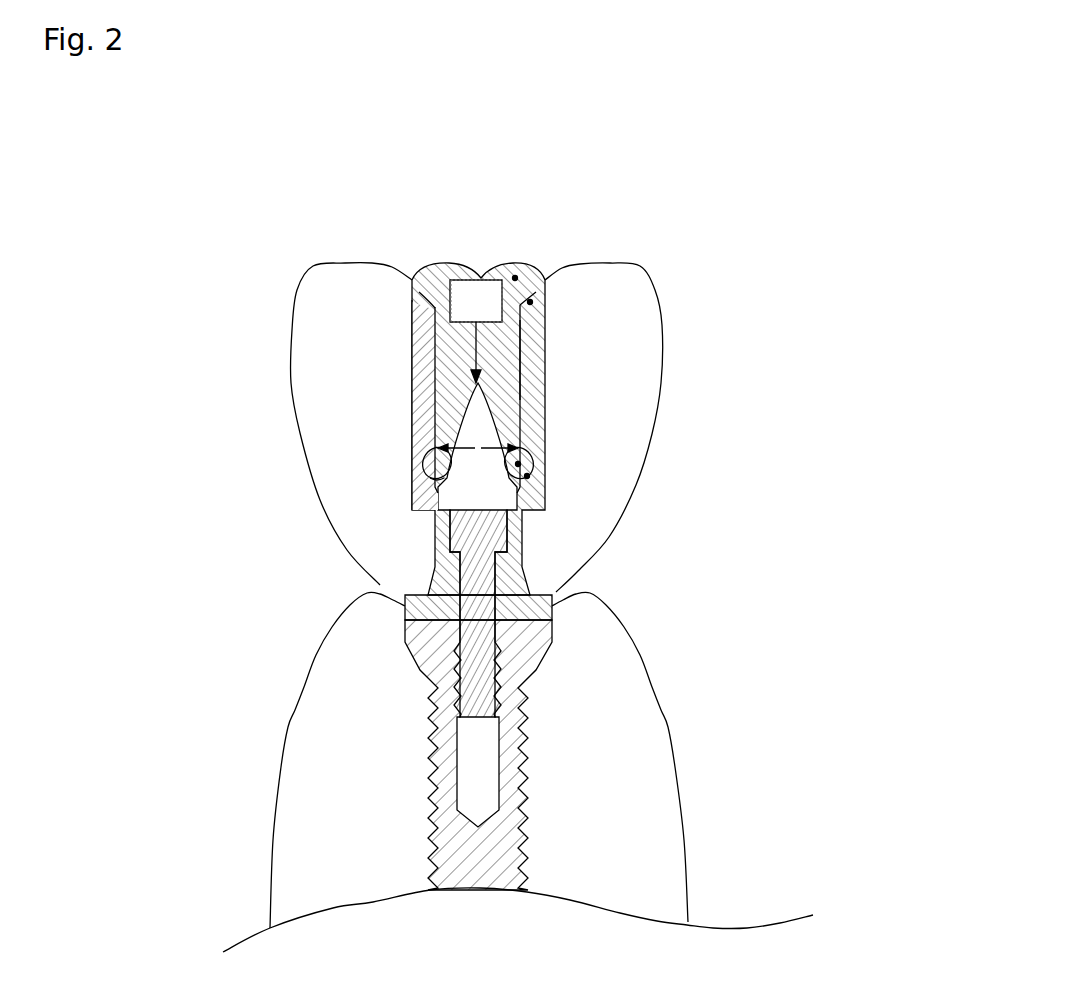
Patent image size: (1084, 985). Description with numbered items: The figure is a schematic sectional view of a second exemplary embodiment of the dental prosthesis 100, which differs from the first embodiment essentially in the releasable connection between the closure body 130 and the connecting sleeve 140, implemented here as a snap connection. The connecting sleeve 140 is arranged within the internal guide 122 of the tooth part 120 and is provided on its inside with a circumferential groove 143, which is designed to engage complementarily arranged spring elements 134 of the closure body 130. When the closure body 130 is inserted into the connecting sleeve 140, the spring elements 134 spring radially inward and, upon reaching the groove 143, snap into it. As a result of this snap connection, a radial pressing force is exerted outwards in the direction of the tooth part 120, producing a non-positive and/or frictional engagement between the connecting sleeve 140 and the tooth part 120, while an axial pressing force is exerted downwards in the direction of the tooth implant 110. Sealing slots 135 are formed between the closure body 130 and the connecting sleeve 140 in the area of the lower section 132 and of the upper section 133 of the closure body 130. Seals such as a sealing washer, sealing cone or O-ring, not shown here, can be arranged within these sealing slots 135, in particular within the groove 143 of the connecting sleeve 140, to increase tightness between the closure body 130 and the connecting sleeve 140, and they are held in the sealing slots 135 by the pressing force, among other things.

The dental prosthesis 100 is at (678, 224).
The tooth implant 110 is at (572, 660).
The tooth part 120 is at (655, 417).
The internal guide 122 is at (522, 352).
The closure body 130 is at (438, 268).
The lower section 132 is at (518, 463).
The upper section 133 is at (515, 278).
The spring elements 134 is at (437, 474).
The sealing slots 135 is at (530, 302).
The connecting sleeve 140 is at (410, 397).
The circumferential groove 143 is at (421, 467).